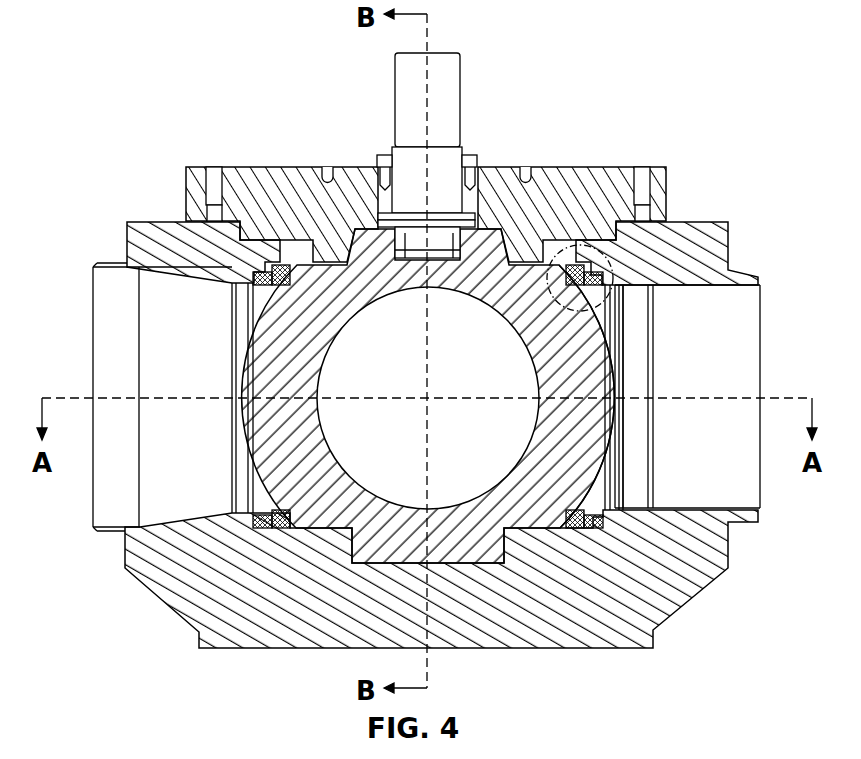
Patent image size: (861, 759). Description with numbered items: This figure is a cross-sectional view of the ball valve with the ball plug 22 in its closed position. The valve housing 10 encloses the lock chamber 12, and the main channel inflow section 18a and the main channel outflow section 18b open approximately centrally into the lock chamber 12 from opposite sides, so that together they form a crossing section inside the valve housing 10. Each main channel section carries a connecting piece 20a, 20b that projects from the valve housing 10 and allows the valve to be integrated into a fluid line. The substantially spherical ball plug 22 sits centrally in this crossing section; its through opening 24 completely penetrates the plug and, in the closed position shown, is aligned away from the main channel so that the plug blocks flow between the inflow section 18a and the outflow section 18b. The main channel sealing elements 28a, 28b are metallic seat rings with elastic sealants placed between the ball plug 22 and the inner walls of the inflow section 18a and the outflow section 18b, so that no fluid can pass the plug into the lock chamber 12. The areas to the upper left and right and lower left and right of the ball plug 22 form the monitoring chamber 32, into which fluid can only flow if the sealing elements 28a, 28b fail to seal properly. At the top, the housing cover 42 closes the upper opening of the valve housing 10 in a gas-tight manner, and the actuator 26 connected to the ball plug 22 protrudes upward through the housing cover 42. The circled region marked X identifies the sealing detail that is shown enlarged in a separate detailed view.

The valve housing 10 is at (443, 427).
The lock chamber 12 is at (431, 469).
The main channel inflow section 18a is at (748, 346).
The main channel outflow section 18b is at (112, 309).
The connecting piece 20a is at (729, 252).
The connecting piece 20b is at (106, 263).
The ball plug 22 is at (521, 504).
The through opening 24 is at (437, 482).
The actuator 26 is at (403, 162).
The main channel sealing element 28a is at (567, 262).
The main channel sealing element 28b is at (278, 268).
The monitoring chamber 32 is at (514, 192).
The housing cover 42 is at (297, 190).
The section X is at (612, 240).